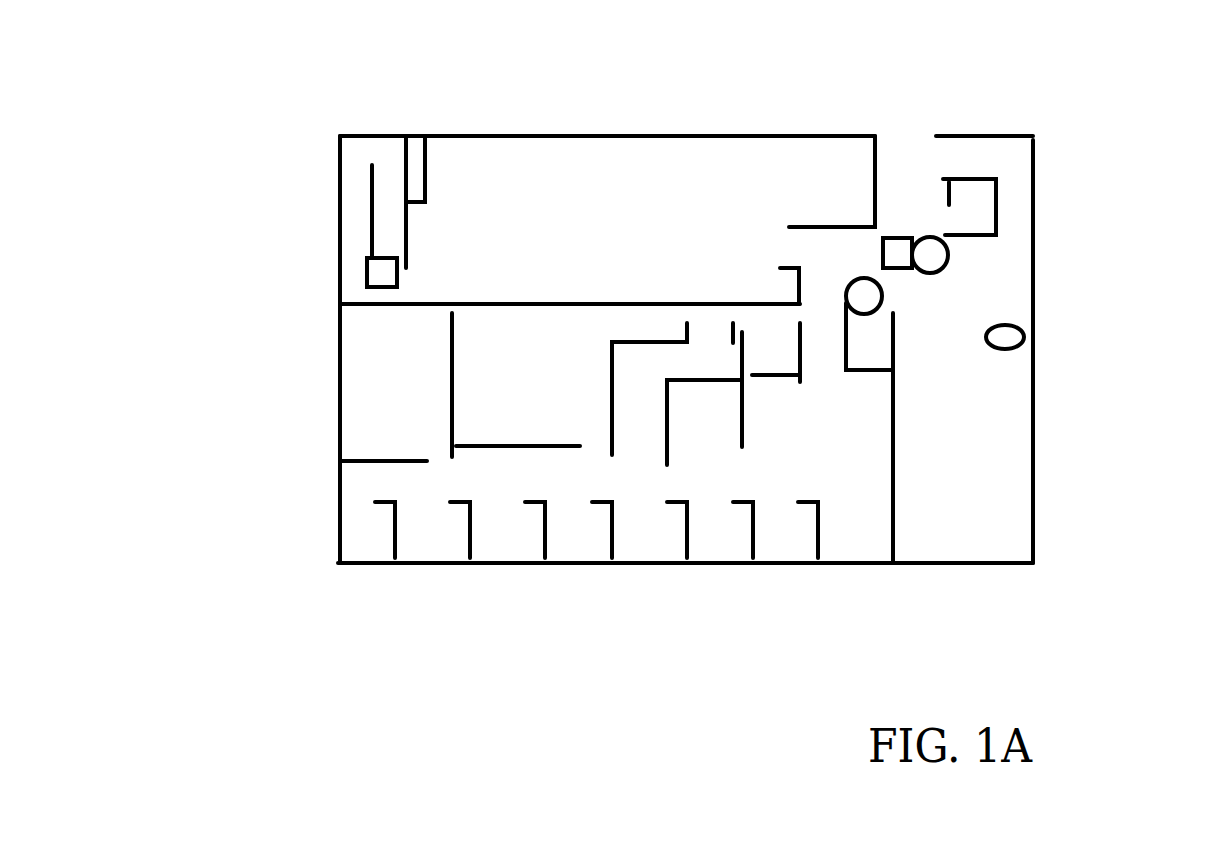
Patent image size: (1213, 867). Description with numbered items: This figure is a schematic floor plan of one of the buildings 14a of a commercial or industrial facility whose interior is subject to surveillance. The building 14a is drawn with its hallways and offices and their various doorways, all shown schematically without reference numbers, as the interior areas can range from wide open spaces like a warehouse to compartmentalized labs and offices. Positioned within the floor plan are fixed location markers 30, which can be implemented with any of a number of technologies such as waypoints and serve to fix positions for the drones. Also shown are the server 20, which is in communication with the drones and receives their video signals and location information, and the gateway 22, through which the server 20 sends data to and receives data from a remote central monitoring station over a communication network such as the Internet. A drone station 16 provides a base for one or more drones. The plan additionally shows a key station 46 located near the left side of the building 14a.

The interior areas (buildings) 14a is at (685, 320).
The key station 46 is at (367, 272).
The fixed location markers 30 is at (912, 236).
The server 20 is at (946, 230).
The gateway 22 is at (846, 298).
The drone station 16 is at (1005, 324).